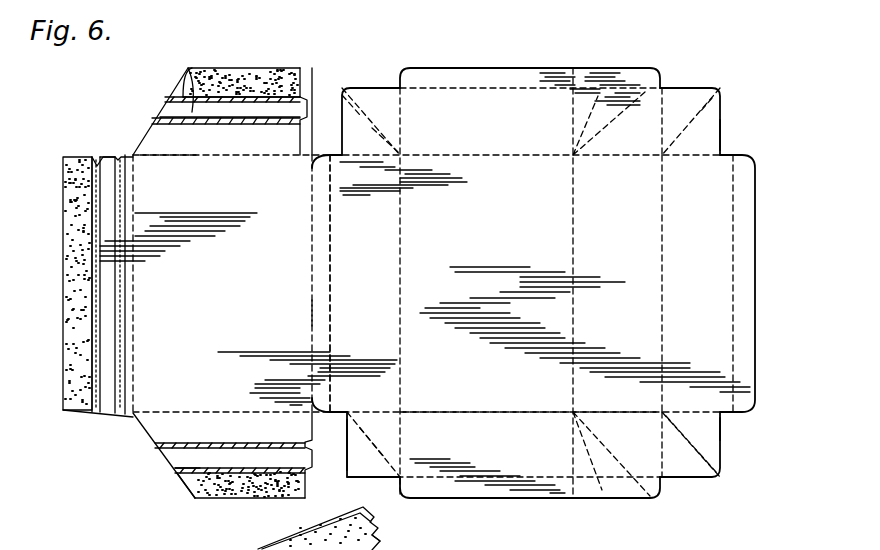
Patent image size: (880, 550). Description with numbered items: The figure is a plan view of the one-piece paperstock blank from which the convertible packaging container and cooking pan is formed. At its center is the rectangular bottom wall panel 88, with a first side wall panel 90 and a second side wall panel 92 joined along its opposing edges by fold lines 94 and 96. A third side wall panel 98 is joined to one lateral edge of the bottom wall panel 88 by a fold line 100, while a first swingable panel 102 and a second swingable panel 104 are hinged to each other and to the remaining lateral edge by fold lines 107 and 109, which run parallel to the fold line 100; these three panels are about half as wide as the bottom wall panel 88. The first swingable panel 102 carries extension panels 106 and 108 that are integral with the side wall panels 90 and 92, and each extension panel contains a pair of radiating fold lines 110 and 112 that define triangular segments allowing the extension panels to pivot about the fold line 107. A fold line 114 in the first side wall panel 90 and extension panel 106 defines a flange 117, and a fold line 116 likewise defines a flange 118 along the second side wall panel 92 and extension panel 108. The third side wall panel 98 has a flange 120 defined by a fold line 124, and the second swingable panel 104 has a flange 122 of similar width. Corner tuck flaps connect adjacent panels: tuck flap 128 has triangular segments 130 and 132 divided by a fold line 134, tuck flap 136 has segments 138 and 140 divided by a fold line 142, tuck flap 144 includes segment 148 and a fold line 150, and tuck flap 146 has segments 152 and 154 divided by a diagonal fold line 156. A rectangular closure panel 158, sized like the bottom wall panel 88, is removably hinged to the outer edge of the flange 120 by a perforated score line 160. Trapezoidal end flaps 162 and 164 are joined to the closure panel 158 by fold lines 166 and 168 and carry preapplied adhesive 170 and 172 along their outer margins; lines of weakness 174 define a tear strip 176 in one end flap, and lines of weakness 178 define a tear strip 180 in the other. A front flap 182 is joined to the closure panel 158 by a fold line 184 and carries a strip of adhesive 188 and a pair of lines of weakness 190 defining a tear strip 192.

The bottom wall panel 88 is at (498, 251).
The first side wall panel 90 is at (518, 122).
The second side wall panel 92 is at (496, 447).
The fold line 94 is at (496, 158).
The fold line 96 is at (468, 410).
The third side wall panel 98 is at (354, 295).
The fold line 100 is at (402, 219).
The first swingable panel 102 is at (604, 344).
The second swingable panel 104 is at (686, 310).
The extension panel 106 is at (625, 136).
The fold line 107 is at (575, 218).
The extension panel 108 is at (622, 439).
The fold line 109 is at (664, 188).
The fold lines 110 is at (628, 97).
The fold lines 112 is at (630, 486).
The fold line 114 is at (452, 90).
The fold line 116 is at (522, 478).
The flange 117 is at (500, 67).
The flange 118 is at (505, 499).
The flange 120 is at (308, 208).
The flange 122 is at (754, 290).
The fold line 124 is at (331, 238).
The tuck flap 128 is at (355, 87).
The triangularly shaped segment 130 is at (352, 131).
The triangularly shaped segment 132 is at (367, 107).
The fold line 134 is at (382, 133).
The tuck flap 136 is at (718, 92).
The segment 138 is at (669, 111).
The segment 140 is at (722, 136).
The fold line 142 is at (722, 121).
The tuck flap 144 is at (710, 480).
The tuck flap 146 is at (672, 472).
The triangular shaped segment 148 is at (712, 432).
The fold line 150 is at (722, 450).
The triangularly shaped segment 152 is at (367, 465).
The triangularly shaped segment 154 is at (347, 432).
The fold line 156 is at (383, 430).
The closure panel 158 is at (224, 257).
The perforated score line 160 is at (302, 306).
The end flap 162 is at (239, 145).
The end flap 164 is at (242, 435).
The fold line 166 is at (190, 158).
The fold line 168 is at (180, 410).
The adhesive 170 is at (262, 66).
The adhesive 172 is at (212, 499).
The lines of weakness 174 is at (157, 121).
The tear strip 176 is at (188, 68).
The lines of weakness 178 is at (157, 447).
The tear strip 180 is at (200, 453).
The front flap 182 is at (72, 190).
The fold line 184 is at (135, 330).
The strip of adhesive 188 is at (80, 370).
The lines of weakness 190 is at (122, 418).
The tear strip 192 is at (108, 156).